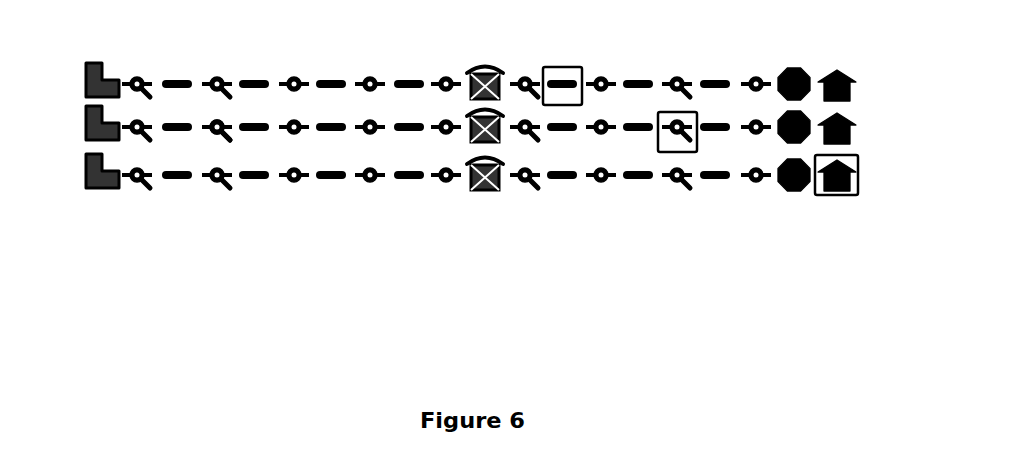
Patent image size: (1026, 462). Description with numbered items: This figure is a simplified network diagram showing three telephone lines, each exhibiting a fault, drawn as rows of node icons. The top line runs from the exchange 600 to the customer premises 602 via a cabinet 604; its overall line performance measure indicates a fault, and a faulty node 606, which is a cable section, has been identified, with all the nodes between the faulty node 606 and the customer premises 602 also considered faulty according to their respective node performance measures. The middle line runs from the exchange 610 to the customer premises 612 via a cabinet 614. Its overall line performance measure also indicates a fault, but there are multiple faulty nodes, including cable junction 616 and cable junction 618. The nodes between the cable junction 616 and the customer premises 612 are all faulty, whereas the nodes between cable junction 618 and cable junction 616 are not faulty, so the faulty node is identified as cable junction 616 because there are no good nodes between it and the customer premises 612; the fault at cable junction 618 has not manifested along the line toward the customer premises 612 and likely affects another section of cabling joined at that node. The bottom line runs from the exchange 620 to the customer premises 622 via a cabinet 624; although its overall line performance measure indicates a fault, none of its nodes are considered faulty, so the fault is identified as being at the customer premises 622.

The exchange 600 is at (460, 73).
The customer premises 602 is at (858, 77).
The cabinet 604 is at (475, 63).
The faulty node 606 is at (567, 67).
The exchange 610 is at (460, 130).
The customer premises 612 is at (858, 127).
The cabinet 614 is at (460, 135).
The cable junction 616 is at (673, 108).
The cable junction 618 is at (237, 138).
The exchange 620 is at (460, 194).
The customer premises 622 is at (860, 183).
The cabinet 624 is at (500, 190).